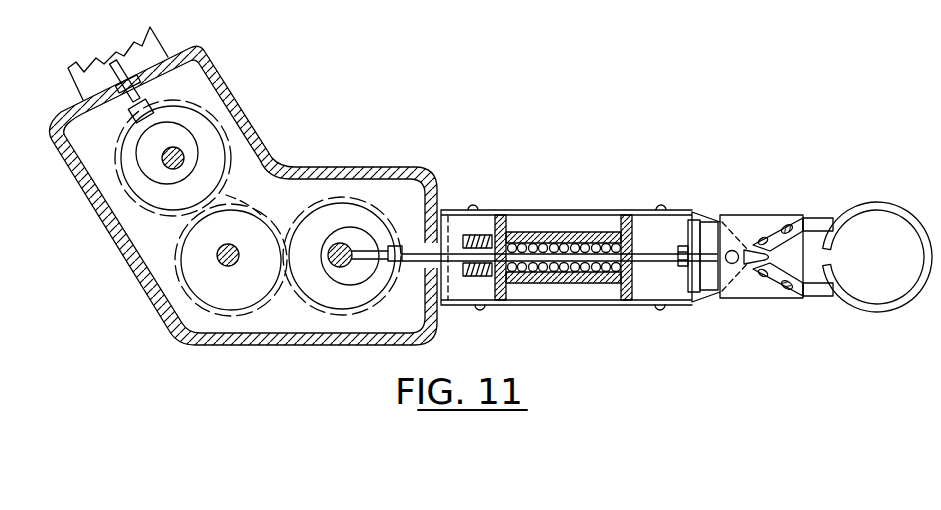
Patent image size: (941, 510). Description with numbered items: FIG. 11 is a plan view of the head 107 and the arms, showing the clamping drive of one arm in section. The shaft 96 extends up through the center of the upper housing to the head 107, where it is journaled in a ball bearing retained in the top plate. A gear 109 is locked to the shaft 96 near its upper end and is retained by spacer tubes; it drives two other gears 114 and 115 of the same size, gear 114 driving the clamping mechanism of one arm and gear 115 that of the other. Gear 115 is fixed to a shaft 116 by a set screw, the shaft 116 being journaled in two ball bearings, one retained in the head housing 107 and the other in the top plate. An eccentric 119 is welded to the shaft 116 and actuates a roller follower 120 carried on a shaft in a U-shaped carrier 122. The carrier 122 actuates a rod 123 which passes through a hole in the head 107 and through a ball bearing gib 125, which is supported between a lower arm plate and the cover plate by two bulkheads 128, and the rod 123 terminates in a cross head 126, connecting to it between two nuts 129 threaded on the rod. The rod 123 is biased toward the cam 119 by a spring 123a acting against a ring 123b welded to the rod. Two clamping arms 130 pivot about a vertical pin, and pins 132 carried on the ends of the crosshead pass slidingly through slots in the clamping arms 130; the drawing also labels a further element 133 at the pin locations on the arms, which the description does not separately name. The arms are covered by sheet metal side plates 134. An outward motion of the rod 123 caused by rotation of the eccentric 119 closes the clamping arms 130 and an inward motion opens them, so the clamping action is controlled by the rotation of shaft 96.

The shaft 96 is at (220, 264).
The head 107 is at (256, 350).
The gear 109 is at (262, 187).
The gear 114 is at (218, 133).
The gear 115 is at (340, 197).
The shaft 116 is at (350, 256).
The eccentric 119 is at (350, 284).
The roller follower 120 is at (386, 244).
The U-shaped carrier 122 is at (400, 268).
The rod 123 is at (447, 250).
The spring 123a is at (482, 278).
The ring 123b is at (470, 276).
The ball bearing gib 125 is at (590, 234).
The cross head 126 is at (722, 224).
The bulkheads 128 is at (630, 304).
The nuts 129 is at (705, 252).
The clamping arms 130 is at (866, 308).
The pins 132 is at (790, 288).
The pivot 133 is at (763, 276).
The sheet metal side plates 134 is at (570, 306).